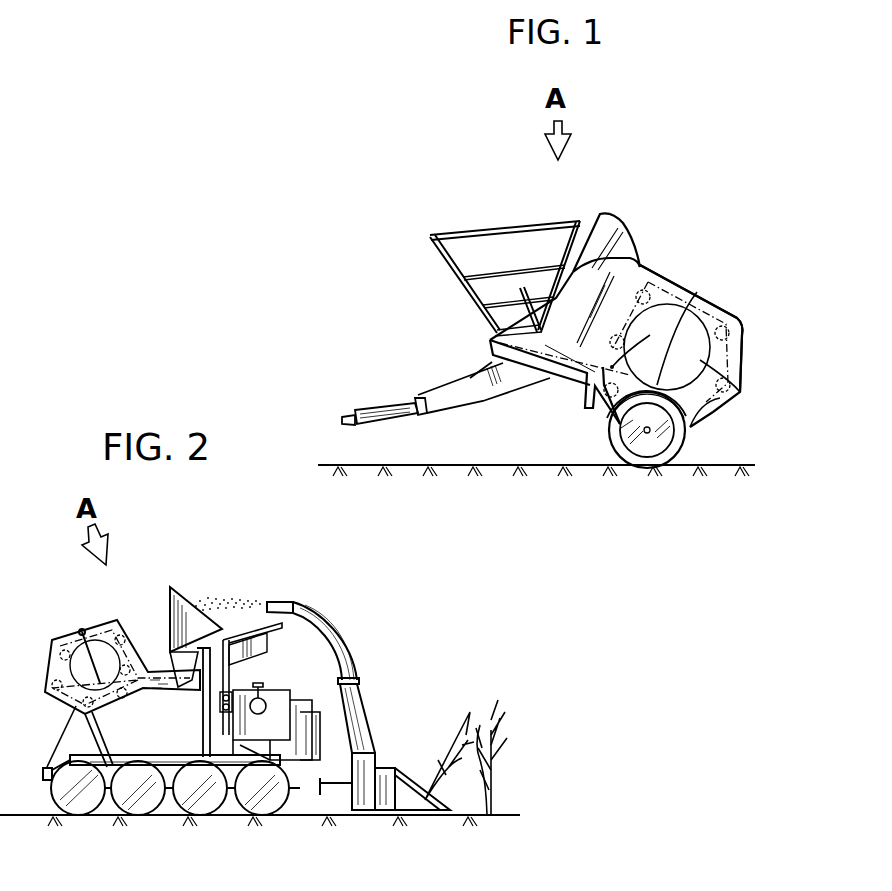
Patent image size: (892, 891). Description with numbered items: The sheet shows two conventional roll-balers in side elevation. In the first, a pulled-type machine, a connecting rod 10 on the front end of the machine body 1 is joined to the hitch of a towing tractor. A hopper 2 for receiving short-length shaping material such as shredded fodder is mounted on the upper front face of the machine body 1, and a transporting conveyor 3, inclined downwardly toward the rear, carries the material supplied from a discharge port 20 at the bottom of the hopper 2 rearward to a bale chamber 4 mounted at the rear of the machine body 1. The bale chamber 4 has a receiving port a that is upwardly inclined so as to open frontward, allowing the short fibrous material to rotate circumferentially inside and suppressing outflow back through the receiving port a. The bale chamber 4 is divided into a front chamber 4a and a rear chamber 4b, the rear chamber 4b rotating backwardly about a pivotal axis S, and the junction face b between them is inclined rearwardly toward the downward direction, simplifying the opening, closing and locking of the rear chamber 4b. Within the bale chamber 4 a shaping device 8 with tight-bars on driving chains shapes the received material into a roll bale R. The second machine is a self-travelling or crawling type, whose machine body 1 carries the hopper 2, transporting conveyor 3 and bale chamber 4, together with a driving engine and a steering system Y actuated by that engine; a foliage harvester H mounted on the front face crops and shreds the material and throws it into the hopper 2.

In FIG. 1, the machine body 1 is at (515, 379).
In FIG. 2, the machine body 1 is at (172, 762).
In FIG. 1, the hopper 2 is at (466, 235).
In FIG. 2, the hopper 2 is at (182, 605).
In FIG. 1, the transporting conveyor 3 is at (567, 380).
In FIG. 2, the transporting conveyor 3 is at (183, 682).
In FIG. 1, the bale chamber 4 is at (682, 290).
In FIG. 2, the bale chamber 4 is at (78, 632).
In FIG. 1, the front chamber 4a is at (653, 268).
In FIG. 1, the rear chamber 4b is at (735, 318).
In FIG. 1, the shaping device 8 is at (730, 374).
In FIG. 1, the connecting rod 10 is at (376, 410).
In FIG. 1, the discharge port 20 is at (512, 335).
In FIG. 1, the roll bale R is at (713, 367).
In FIG. 1, the pivotal axis S is at (697, 292).
In FIG. 1, the receiving port a is at (650, 335).
In FIG. 1, the junction face b is at (692, 426).
In FIG. 2, the harvester H is at (362, 748).
In FIG. 2, the steering system Y is at (267, 797).